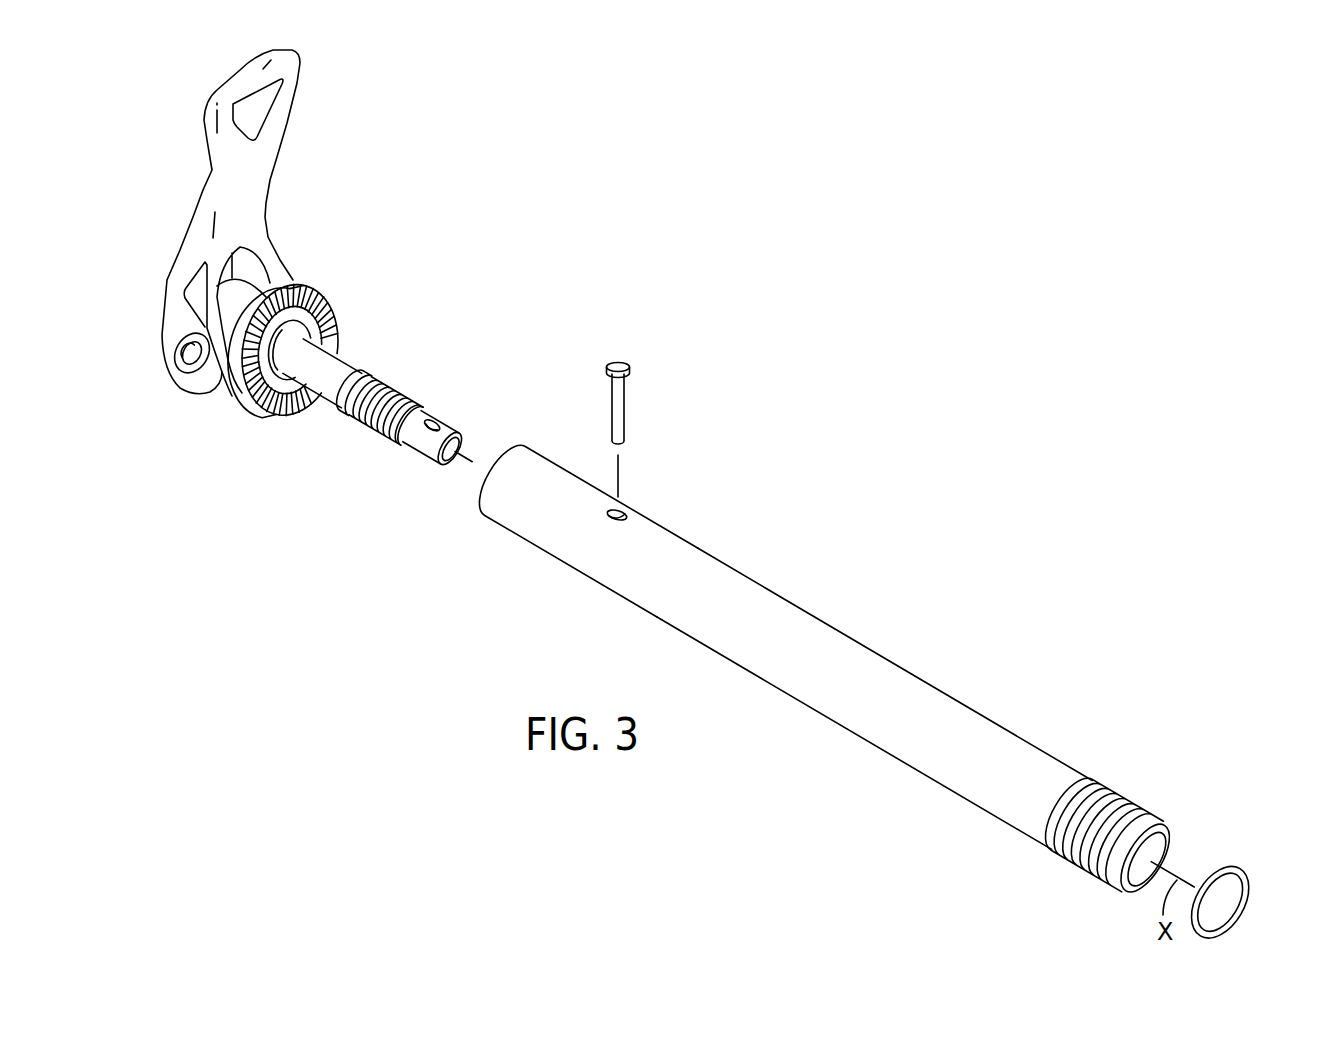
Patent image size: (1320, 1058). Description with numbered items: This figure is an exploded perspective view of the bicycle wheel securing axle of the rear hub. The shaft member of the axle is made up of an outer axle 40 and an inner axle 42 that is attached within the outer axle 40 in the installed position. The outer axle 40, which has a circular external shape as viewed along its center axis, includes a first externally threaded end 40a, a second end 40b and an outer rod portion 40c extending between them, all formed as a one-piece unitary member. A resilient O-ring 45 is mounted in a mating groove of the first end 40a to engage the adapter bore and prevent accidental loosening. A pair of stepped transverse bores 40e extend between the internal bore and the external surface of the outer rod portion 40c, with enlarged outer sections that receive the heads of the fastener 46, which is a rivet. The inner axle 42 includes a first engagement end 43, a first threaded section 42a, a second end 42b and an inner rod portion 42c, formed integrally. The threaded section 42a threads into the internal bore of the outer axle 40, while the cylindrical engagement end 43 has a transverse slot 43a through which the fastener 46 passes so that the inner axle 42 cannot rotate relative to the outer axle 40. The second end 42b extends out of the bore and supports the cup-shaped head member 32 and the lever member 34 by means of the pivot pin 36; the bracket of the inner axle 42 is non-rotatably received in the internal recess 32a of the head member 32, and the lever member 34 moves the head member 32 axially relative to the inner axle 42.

The head member 32 is at (305, 363).
The internal recess 32a is at (327, 340).
The lever member 34 is at (292, 147).
The pivot pin 36 is at (183, 361).
The outer axle 40 is at (835, 669).
The first externally threaded end 40a is at (1115, 813).
The second end 40b is at (500, 502).
The outer rod portion 40c is at (920, 723).
The stepped transverse bores 40e is at (623, 510).
The inner axle 42 is at (406, 421).
The first threaded section 42a is at (376, 417).
The second end 42b is at (288, 349).
The inner rod portion 42c is at (325, 382).
The first engagement end 43 is at (458, 437).
The slot 43a is at (430, 428).
The O-ring 45 is at (1258, 874).
The fastener 46 is at (640, 351).